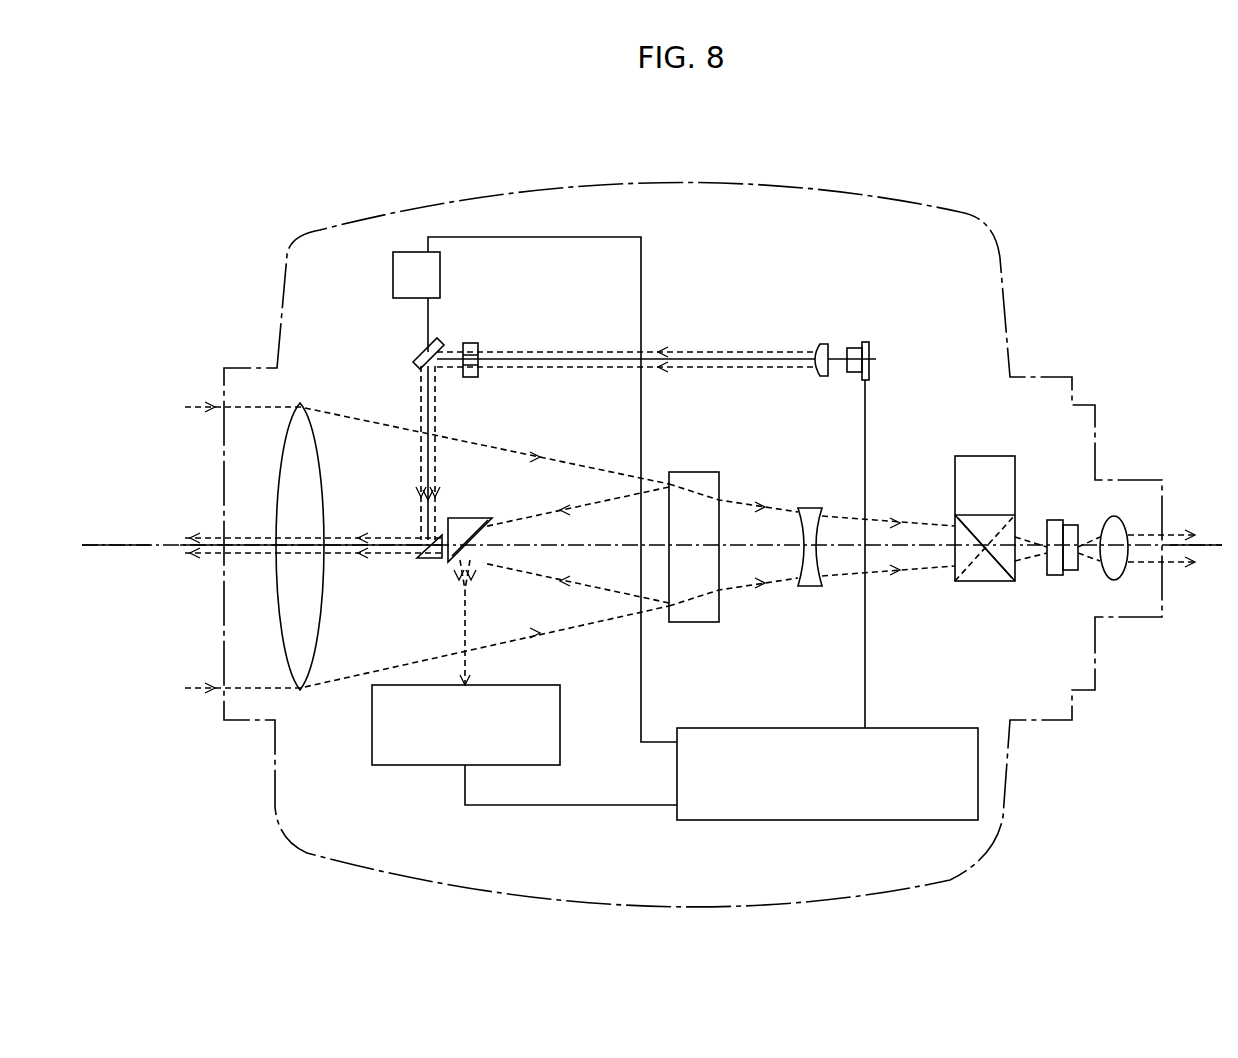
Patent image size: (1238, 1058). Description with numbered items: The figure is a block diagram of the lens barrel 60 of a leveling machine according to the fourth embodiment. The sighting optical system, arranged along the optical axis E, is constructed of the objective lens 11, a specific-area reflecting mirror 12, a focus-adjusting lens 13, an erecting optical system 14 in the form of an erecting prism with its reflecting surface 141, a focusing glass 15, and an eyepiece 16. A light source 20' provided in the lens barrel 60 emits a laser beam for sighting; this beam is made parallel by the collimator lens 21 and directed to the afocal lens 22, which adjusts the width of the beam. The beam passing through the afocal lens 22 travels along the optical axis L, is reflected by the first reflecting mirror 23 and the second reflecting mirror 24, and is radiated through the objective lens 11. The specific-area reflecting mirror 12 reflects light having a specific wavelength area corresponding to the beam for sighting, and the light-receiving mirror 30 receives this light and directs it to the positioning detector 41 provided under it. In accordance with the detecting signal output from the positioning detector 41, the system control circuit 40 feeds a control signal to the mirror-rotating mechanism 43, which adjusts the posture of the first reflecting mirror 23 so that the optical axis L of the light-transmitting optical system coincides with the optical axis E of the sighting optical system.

The lens barrel 60 is at (762, 186).
The mirror-rotating mechanism 43 is at (393, 274).
The first reflecting mirror 23 is at (412, 358).
The afocal lens 22 is at (471, 343).
The optical axis of the light-transmitting optical system L is at (553, 351).
The collimator lens 21 is at (820, 345).
The light source 20' is at (853, 338).
The second reflecting mirror 24 is at (428, 562).
The objective lens 11 is at (290, 434).
The specific-area reflecting mirror 12 is at (696, 472).
The focus-adjusting lens 13 is at (812, 508).
The erecting optical system 14 is at (985, 456).
The reflecting surface 141 is at (958, 535).
The focusing glass 15 is at (1062, 520).
The eyepiece 16 is at (1106, 578).
The light-receiving mirror 30 is at (470, 518).
The positioning detector 41 is at (560, 724).
The system control circuit 40 is at (826, 821).
The optical axis of the sighting optical system E is at (652, 534).